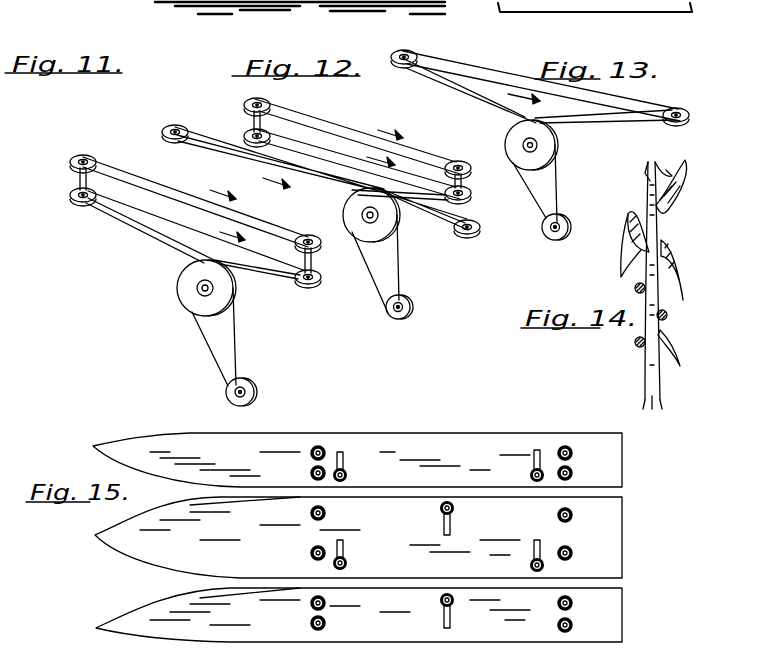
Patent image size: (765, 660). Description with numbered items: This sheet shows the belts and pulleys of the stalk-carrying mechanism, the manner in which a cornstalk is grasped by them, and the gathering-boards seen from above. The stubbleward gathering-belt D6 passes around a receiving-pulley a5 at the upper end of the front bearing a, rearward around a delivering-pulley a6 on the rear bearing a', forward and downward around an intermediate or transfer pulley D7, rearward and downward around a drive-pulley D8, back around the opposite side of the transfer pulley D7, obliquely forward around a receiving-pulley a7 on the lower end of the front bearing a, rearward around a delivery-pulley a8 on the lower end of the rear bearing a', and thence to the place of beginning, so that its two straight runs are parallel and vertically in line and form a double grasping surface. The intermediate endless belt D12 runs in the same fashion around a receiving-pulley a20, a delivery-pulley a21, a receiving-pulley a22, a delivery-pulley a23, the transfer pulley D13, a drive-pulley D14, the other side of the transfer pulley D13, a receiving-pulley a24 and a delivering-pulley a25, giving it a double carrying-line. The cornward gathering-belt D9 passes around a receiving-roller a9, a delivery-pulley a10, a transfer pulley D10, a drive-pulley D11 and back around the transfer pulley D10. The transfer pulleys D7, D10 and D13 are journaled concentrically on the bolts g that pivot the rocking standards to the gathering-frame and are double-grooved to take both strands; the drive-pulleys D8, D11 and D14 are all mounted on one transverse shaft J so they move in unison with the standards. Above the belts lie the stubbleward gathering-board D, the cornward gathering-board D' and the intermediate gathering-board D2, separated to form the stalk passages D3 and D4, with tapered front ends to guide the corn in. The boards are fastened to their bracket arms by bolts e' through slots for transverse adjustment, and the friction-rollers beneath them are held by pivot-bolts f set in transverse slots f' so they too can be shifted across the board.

In FIG. 11, the upright bearing a is at (65, 179).
In FIG. 11, the upright bearing a' is at (324, 260).
In FIG. 11, the receiving-pulley a5 is at (82, 155).
In FIG. 11, the delivering-pulley a6 is at (321, 243).
In FIG. 11, the receiving-pulley a7 is at (76, 199).
In FIG. 11, the delivery-pulley a8 is at (321, 281).
In FIG. 13, the receiving-roller a9 is at (413, 52).
In FIG. 13, the delivery-pulley a10 is at (689, 116).
In FIG. 12, the receiving-pulley a20 is at (173, 126).
In FIG. 12, the delivery-pulley a21 is at (476, 235).
In FIG. 12, the receiving-pulley a22 is at (262, 94).
In FIG. 12, the delivery-pulley a23 is at (462, 161).
In FIG. 12, the receiving-pulley a24 is at (250, 134).
In FIG. 12, the delivering-pulley a25 is at (472, 194).
In FIG. 15, the inner or stubbleward gathering-board D is at (359, 615).
In FIG. 15, the outer or cornward gathering-board D' is at (357, 460).
In FIG. 15, the intermediate gathering-board D2 is at (380, 522).
In FIG. 15, the passage D3 is at (282, 582).
In FIG. 15, the passage D4 is at (278, 488).
In FIG. 11, the stubbleward gathering-belt D6 is at (170, 209).
In FIG. 11, the intermediate or transfer pulley D7 is at (188, 291).
In FIG. 11, the drive-pulley D8 is at (256, 395).
In FIG. 13, the cornward gathering-belt D9 is at (486, 85).
In FIG. 13, the intermediate or transfer pulley D10 is at (548, 158).
In FIG. 13, the drive-pulley D11 is at (561, 237).
In FIG. 12, the intermediate endless belt D12 is at (346, 126).
In FIG. 12, the intermediate or transfer pulley D13 is at (352, 219).
In FIG. 12, the drive-pulley D14 is at (408, 318).
In FIG. 11, the bolt g is at (201, 293).
In FIG. 12, the bolt g is at (376, 219).
In FIG. 13, the bolt g is at (539, 147).
In FIG. 11, the transverse shaft J is at (233, 395).
In FIG. 12, the transverse shaft J is at (391, 314).
In FIG. 13, the transverse shaft J is at (568, 221).
In FIG. 15, the bolt e' is at (446, 535).
In FIG. 15, the pivot-bolt f is at (439, 547).
In FIG. 15, the transverse slot f' is at (438, 535).